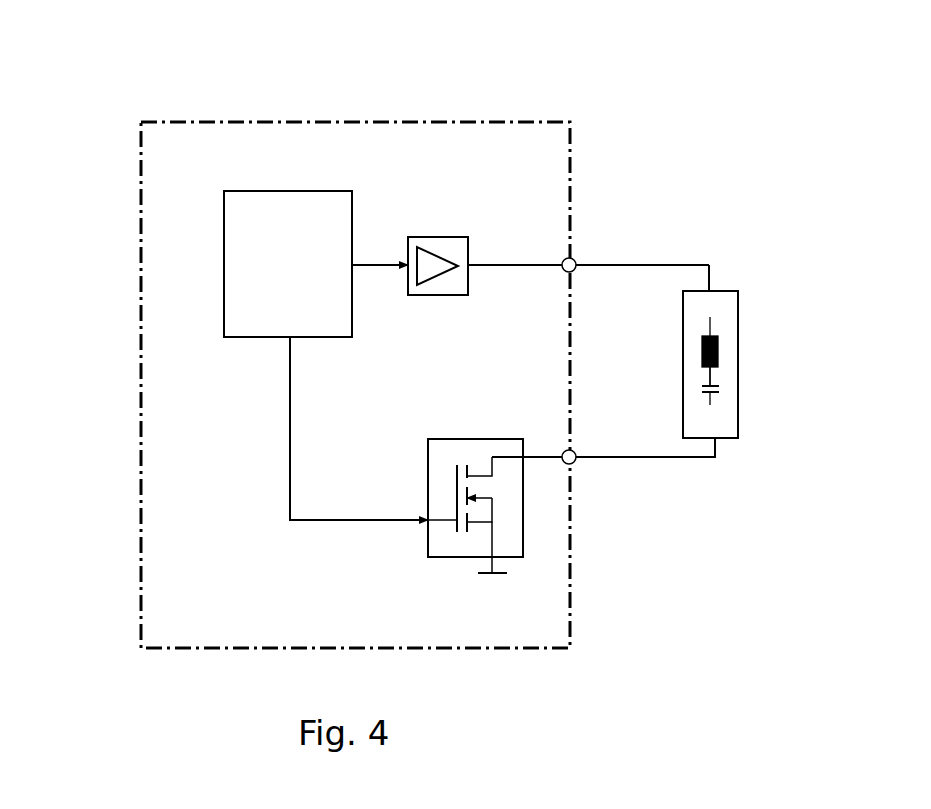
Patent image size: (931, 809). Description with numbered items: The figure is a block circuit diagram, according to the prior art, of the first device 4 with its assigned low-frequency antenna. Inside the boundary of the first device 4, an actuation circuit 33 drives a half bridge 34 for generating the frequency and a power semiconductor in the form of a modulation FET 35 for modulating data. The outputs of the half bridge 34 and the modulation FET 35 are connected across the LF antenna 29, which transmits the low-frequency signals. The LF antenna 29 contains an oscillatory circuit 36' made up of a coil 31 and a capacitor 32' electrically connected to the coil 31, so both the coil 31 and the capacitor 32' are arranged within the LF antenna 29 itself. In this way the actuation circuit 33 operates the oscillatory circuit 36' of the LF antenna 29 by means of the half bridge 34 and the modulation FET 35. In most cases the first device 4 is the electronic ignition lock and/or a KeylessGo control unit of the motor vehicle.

The first device 4 is at (362, 122).
The actuation circuit 33 is at (238, 250).
The half bridge 34 is at (466, 253).
The LF antenna 29 is at (738, 291).
The coil 31 is at (717, 352).
The oscillatory circuit 36' is at (773, 384).
The capacitor 32' is at (768, 411).
The modulation FET 35 is at (507, 505).